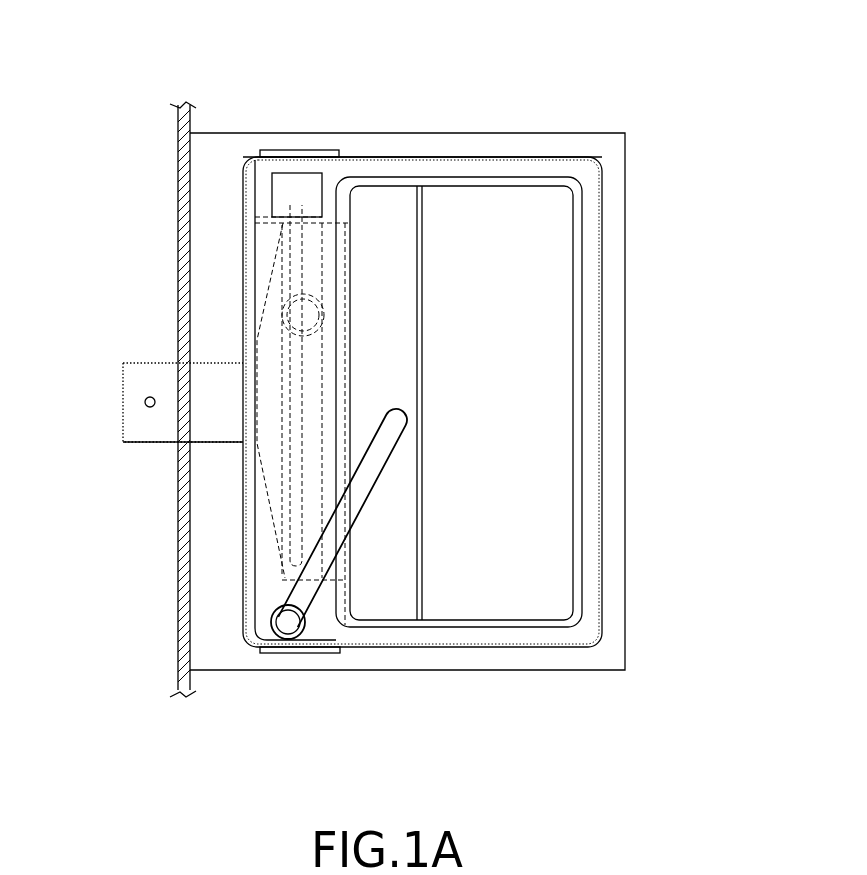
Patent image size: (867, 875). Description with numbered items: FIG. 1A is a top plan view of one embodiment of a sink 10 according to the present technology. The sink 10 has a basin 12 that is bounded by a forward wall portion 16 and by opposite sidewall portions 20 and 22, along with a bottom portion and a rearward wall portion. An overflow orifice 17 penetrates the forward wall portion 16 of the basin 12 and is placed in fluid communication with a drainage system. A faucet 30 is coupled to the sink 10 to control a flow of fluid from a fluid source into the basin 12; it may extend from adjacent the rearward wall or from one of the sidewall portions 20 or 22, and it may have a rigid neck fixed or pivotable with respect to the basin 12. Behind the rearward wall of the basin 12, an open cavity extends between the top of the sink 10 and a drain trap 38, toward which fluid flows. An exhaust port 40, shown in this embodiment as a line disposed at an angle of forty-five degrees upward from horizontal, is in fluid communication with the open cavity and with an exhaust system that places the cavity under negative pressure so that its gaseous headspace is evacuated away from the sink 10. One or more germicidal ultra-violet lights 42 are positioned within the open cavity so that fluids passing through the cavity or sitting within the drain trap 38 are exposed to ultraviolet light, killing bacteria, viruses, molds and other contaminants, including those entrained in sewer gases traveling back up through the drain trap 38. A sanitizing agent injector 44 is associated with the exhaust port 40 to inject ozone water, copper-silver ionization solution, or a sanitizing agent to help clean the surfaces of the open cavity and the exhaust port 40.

The sink 10 is at (622, 107).
The basin 12 is at (512, 287).
The forward wall portion 16 is at (533, 360).
The overflow orifice 17 is at (577, 395).
The sidewall portion 20 is at (478, 648).
The sidewall portion 22 is at (490, 155).
The faucet 30 is at (310, 590).
The drain trap 38 is at (300, 318).
The exhaust port 40 is at (155, 437).
The germicidal ultra-violet light 42 is at (292, 257).
The sanitizing agent injector 44 is at (147, 407).